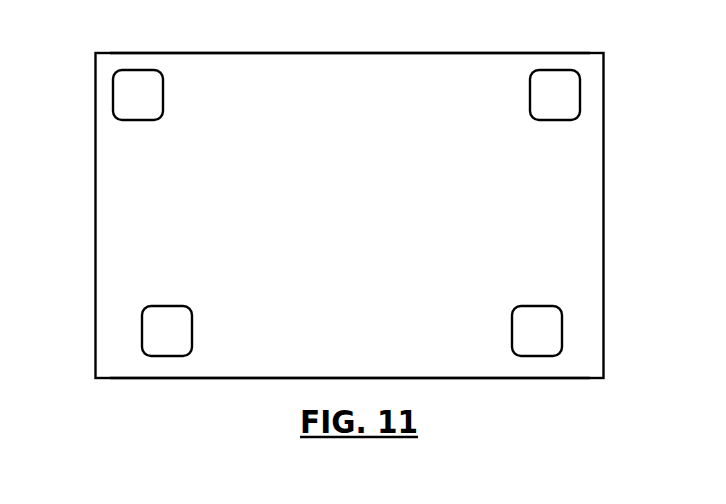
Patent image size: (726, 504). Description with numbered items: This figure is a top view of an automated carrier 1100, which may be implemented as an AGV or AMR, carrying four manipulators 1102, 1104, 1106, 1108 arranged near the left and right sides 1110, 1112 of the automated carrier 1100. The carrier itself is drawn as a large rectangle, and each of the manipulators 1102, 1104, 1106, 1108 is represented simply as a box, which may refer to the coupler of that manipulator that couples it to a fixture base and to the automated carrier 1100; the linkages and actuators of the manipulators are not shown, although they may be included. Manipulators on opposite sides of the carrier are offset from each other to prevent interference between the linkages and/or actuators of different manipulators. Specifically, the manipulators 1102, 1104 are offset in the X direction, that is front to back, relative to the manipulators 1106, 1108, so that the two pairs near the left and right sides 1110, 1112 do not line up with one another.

The automated carrier 1100 is at (604, 53).
The manipulator 1102 is at (192, 323).
The manipulator 1104 is at (562, 325).
The manipulator 1106 is at (163, 93).
The manipulator 1108 is at (580, 91).
The left side 1110 is at (321, 53).
The right side 1112 is at (505, 378).